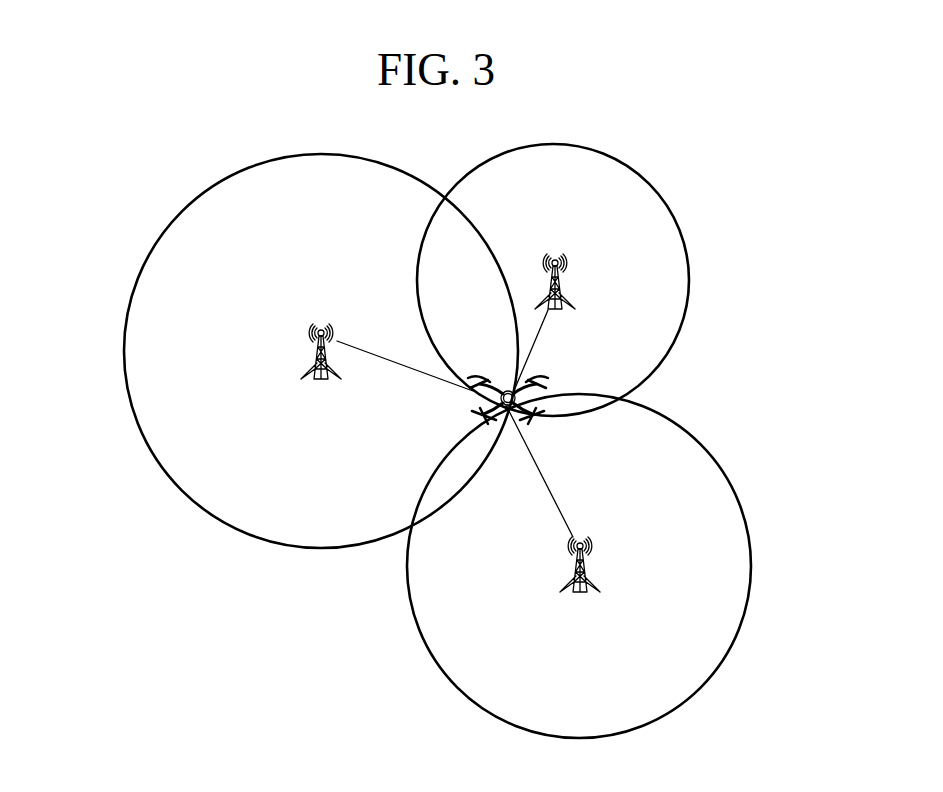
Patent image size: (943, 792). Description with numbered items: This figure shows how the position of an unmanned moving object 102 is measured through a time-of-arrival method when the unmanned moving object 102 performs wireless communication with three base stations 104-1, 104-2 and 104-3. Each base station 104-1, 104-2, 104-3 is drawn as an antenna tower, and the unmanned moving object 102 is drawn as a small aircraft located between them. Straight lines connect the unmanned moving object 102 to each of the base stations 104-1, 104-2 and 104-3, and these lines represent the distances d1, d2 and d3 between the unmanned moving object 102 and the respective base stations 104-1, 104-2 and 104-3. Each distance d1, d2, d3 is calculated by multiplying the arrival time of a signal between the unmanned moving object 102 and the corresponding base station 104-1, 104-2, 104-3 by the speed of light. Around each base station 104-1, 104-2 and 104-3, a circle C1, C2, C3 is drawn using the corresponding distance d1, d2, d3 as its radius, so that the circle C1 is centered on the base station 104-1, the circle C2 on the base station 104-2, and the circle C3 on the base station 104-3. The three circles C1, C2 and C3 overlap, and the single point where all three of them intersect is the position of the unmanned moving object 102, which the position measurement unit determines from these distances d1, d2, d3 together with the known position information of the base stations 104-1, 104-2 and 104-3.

The unmanned moving object 102 is at (538, 422).
The base station 104-1 is at (568, 580).
The base station 104-2 is at (310, 368).
The base station 104-3 is at (572, 296).
The circle C1 is at (750, 563).
The circle C2 is at (123, 353).
The circle C3 is at (691, 278).
The distance d1 is at (541, 474).
The distance d2 is at (405, 364).
The distance d3 is at (537, 351).